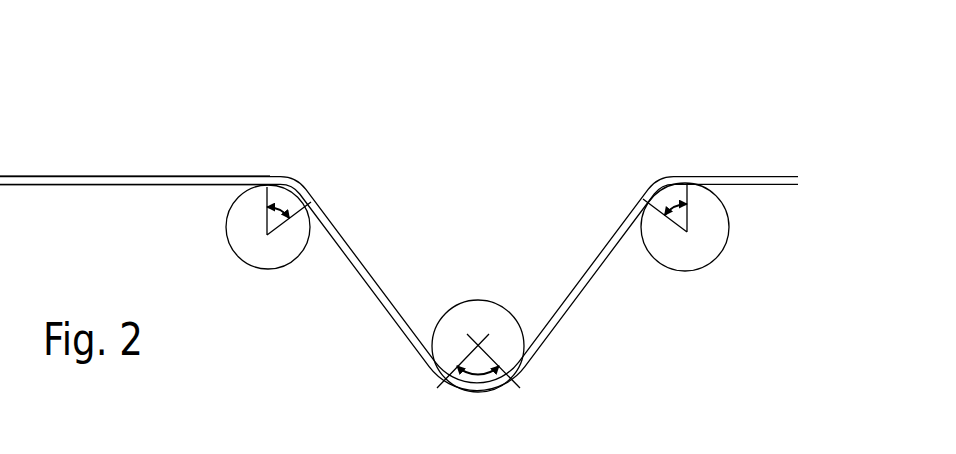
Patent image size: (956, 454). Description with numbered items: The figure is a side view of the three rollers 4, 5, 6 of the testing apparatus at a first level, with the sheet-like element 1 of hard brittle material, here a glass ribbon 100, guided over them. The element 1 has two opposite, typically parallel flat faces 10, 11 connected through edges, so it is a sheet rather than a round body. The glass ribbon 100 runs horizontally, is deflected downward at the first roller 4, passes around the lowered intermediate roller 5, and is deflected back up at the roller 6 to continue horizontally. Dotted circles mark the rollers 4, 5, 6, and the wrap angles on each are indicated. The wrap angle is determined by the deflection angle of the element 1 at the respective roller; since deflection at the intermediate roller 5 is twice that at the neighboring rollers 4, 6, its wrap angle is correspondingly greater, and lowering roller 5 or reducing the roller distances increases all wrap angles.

The sheet-like element 1 is at (788, 164).
The glass ribbon 100 is at (784, 453).
The face 10 is at (47, 177).
The face 11 is at (140, 185).
The roller 4 is at (226, 228).
The intermediate roller 5 is at (523, 338).
The roller 6 is at (722, 258).